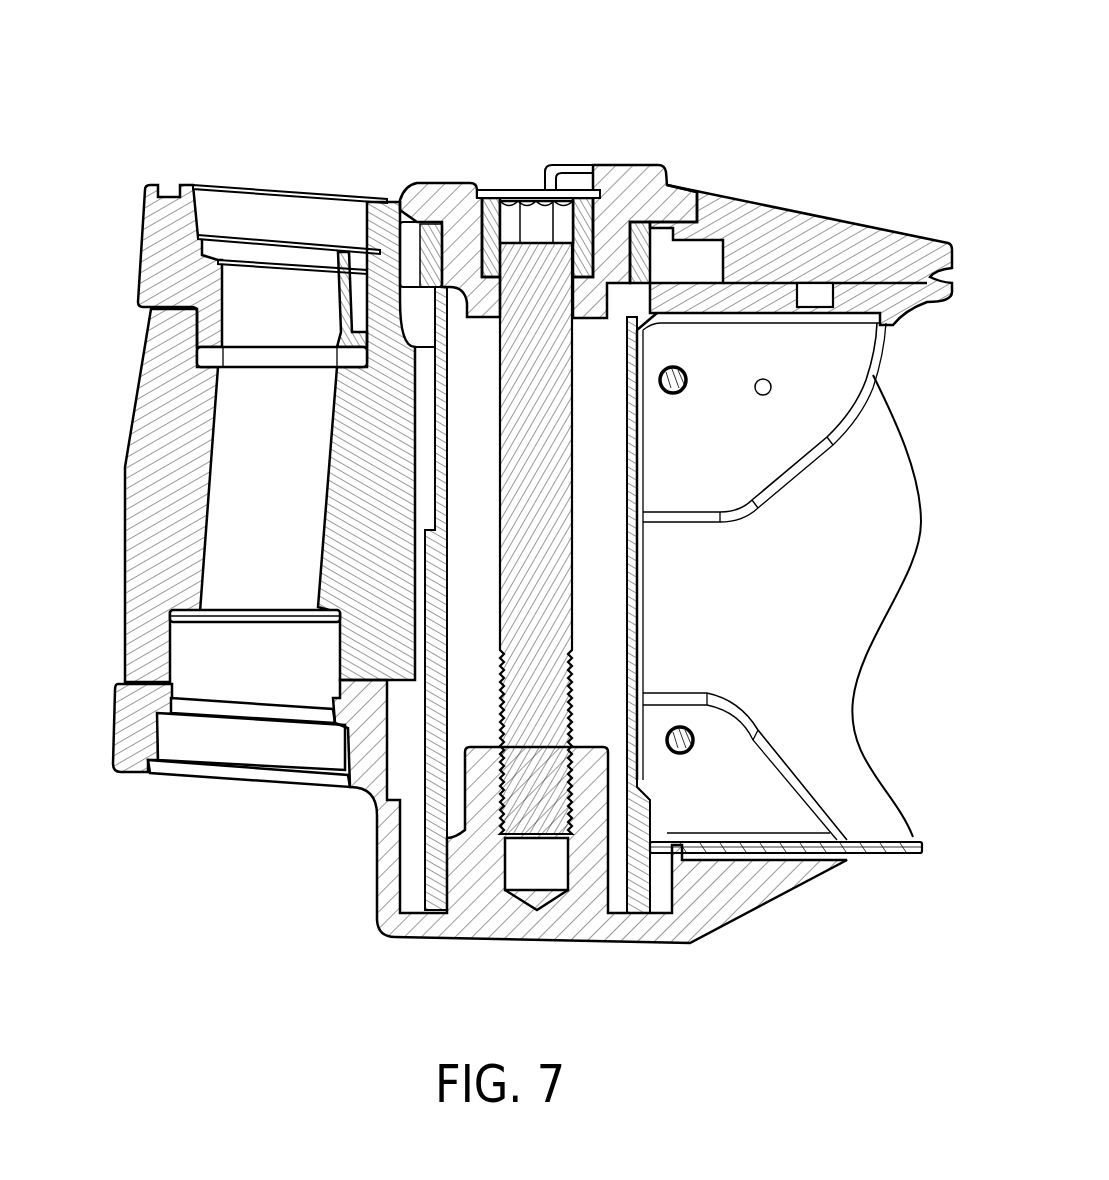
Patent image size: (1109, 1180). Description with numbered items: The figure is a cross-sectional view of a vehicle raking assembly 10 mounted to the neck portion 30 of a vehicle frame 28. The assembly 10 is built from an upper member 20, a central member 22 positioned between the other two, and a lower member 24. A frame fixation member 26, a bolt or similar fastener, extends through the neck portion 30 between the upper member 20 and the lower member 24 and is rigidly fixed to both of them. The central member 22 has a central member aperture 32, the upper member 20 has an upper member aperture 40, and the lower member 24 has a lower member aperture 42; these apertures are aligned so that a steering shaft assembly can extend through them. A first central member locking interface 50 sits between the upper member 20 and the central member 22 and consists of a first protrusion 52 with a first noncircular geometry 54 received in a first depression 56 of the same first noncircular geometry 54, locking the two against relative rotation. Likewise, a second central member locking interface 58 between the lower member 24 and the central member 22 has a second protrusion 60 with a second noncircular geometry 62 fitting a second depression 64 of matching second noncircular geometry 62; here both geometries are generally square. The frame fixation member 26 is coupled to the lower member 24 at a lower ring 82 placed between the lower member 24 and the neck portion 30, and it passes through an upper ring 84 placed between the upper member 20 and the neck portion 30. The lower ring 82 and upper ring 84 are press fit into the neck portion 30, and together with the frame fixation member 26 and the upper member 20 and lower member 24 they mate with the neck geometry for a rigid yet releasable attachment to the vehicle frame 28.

The vehicle raking assembly 10 is at (160, 907).
The upper member 20 is at (143, 213).
The central member 22 is at (155, 403).
The lower member 24 is at (135, 725).
The frame fixation member 26 is at (493, 218).
The vehicle frame 28 is at (835, 385).
The neck portion 30 is at (678, 262).
The central member aperture 32 is at (210, 472).
The upper member aperture 40 is at (207, 258).
The lower member aperture 42 is at (185, 690).
The first central member locking interface 50 is at (126, 312).
The first protrusion 52 is at (350, 328).
The first noncircular geometry 54 is at (358, 330).
The first depression 56 is at (200, 353).
The second central member locking interface 58 is at (108, 657).
The second protrusion 60 is at (330, 675).
The second noncircular geometry 62 is at (320, 655).
The second depression 64 is at (128, 590).
The lower ring 82 is at (415, 882).
The upper ring 84 is at (647, 240).